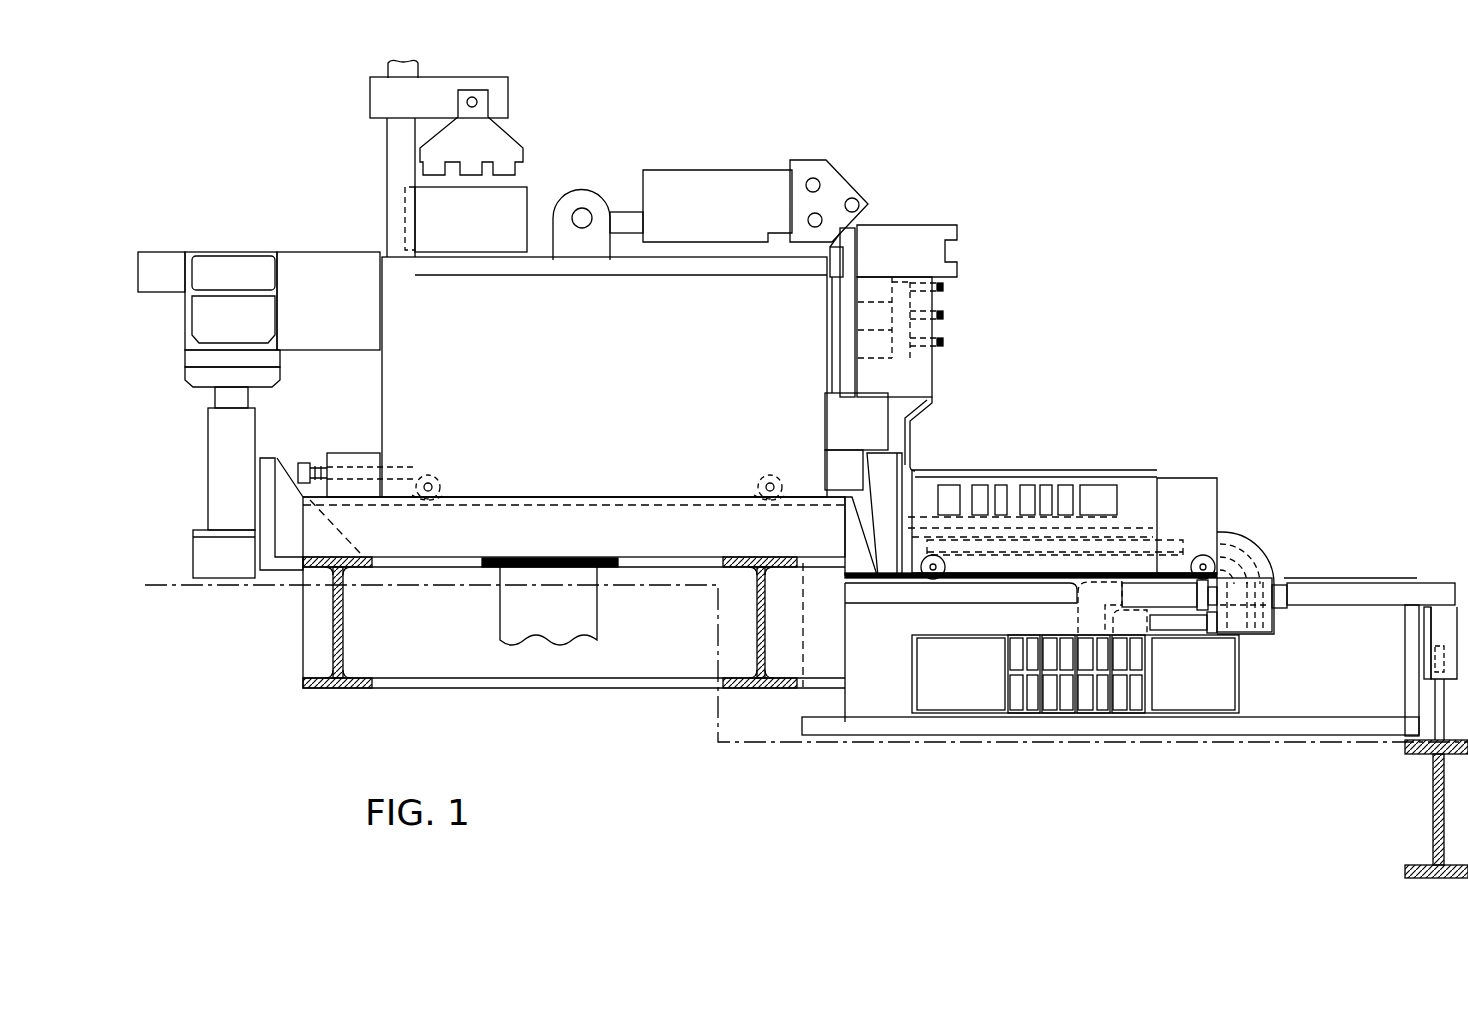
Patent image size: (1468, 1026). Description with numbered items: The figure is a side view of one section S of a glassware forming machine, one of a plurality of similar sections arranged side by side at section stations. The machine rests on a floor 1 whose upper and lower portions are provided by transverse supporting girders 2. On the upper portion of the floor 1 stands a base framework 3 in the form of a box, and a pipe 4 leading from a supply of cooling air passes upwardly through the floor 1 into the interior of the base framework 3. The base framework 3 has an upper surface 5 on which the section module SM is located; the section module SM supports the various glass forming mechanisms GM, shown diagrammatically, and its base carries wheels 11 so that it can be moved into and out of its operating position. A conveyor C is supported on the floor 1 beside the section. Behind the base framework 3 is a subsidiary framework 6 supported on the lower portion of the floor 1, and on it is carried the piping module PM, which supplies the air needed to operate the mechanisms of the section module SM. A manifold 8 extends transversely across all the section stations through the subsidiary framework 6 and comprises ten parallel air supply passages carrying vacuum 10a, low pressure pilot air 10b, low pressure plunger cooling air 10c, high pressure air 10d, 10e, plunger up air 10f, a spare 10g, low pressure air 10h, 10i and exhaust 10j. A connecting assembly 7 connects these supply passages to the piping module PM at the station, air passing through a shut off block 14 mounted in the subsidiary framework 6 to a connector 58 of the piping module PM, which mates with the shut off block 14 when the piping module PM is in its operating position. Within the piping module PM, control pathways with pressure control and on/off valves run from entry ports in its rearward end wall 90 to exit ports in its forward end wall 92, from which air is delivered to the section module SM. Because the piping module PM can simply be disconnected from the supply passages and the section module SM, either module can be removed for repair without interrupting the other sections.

The conveyor C is at (222, 230).
The glass forming mechanisms GM is at (734, 144).
The section S is at (1018, 336).
The section module SM is at (580, 376).
The piping module PM is at (1132, 493).
The floor 1 is at (262, 590).
The transverse supporting girders 2 is at (345, 620).
The base framework 3 is at (628, 544).
The pipe 4 is at (560, 629).
The upper surface 5 is at (565, 497).
The subsidiary framework 6 is at (1410, 661).
The connecting assembly 7 is at (1300, 564).
The manifold 8 is at (910, 667).
The vacuum supply passage 10a is at (1218, 698).
The low pressure pilot air supply passage 10b is at (1137, 703).
The low pressure plunger cooling air supply passage 10c is at (1118, 703).
The high pressure air supply passage 10d is at (1103, 703).
The high pressure air supply passage 10e is at (1087, 703).
The plunger up air supply passage 10f is at (1067, 703).
The spare supply passage 10g is at (1050, 703).
The low pressure air supply passage 10h is at (1032, 707).
The low pressure air supply passage 10i is at (1017, 703).
The exhaust supply passage 10j is at (938, 695).
The wheels 11 is at (772, 477).
The shut off block 14 is at (1258, 623).
The connector 58 is at (1258, 532).
The rearward end wall 90 is at (1218, 484).
The forward end wall 92 is at (902, 490).